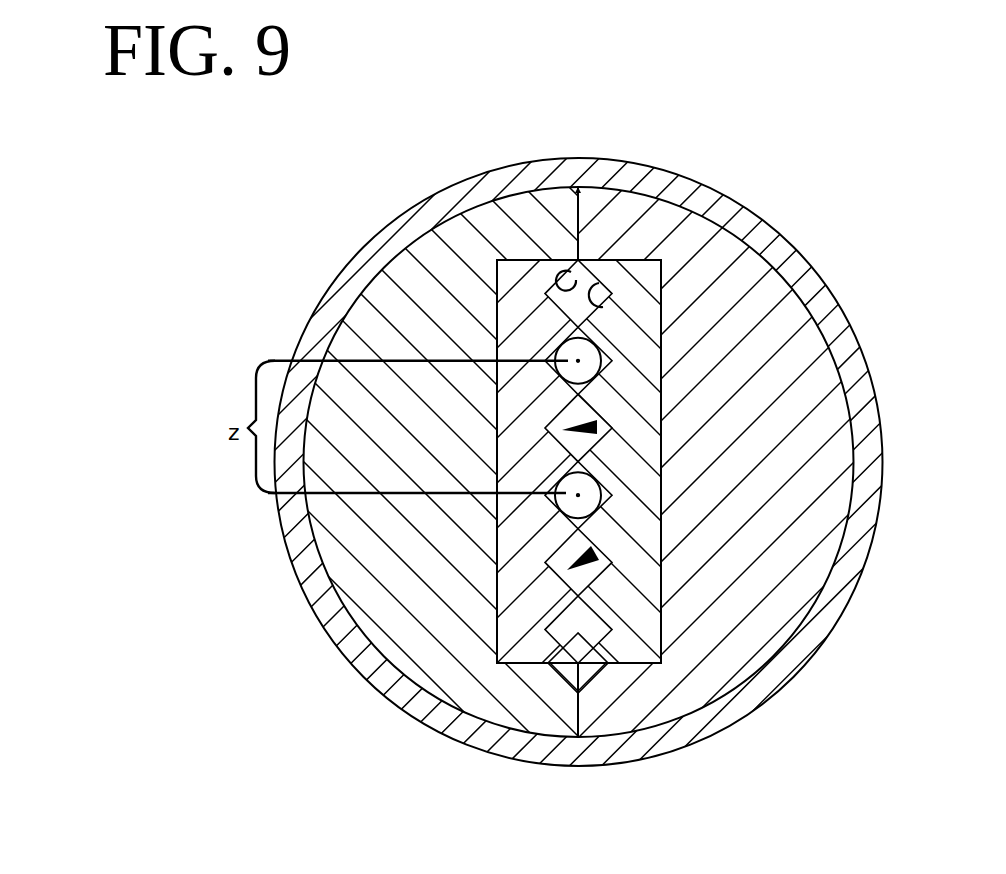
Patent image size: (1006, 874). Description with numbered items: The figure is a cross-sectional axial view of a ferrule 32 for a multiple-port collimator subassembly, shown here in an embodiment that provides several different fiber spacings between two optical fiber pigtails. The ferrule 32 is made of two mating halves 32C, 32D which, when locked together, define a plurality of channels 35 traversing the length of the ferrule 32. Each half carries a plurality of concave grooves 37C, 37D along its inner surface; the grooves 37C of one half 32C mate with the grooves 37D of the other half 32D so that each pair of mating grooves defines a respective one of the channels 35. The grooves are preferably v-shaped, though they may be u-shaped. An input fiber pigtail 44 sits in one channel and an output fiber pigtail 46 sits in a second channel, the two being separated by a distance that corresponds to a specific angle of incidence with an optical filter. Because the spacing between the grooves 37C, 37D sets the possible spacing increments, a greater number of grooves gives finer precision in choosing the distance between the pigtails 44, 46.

The ferrule 32 is at (165, 668).
The mating half of the ferrule 32C is at (410, 267).
The mating half of the ferrule 32D is at (762, 292).
The channels 35 is at (595, 425).
The concave grooves 37C is at (571, 272).
The concave grooves 37D is at (599, 283).
The input fiber pigtail 44 is at (570, 345).
The output fiber pigtail 46 is at (565, 508).